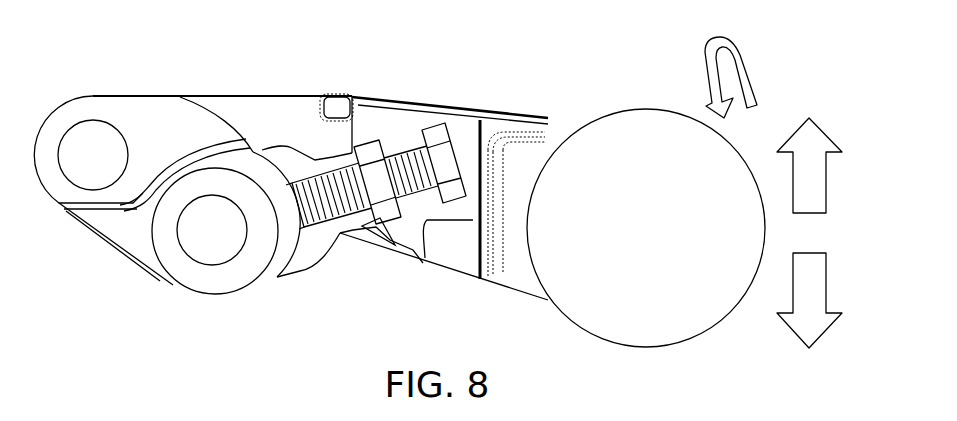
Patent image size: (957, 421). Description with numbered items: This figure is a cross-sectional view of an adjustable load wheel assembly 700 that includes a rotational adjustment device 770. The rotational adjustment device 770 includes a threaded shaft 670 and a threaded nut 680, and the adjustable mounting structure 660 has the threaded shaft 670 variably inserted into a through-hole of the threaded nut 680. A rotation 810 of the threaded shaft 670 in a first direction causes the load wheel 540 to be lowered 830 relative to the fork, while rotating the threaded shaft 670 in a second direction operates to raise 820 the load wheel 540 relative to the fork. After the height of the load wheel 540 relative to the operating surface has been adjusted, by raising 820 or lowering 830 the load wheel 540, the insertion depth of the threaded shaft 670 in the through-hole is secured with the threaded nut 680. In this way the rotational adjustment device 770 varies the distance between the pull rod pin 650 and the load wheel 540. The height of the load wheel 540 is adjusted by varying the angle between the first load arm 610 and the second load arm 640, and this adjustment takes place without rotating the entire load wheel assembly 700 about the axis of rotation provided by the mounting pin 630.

The load wheel assembly 700 is at (224, 63).
The first load arm 610 is at (277, 95).
The mounting pin 630 is at (80, 122).
The second load arm 640 is at (108, 238).
The pull rod pin 650 is at (210, 266).
The adjustable mounting structure 660 is at (263, 281).
The threaded shaft 670 is at (476, 136).
The threaded nut 680 is at (392, 244).
The rotational adjustment device 770 is at (426, 91).
The load wheel 540 is at (683, 337).
The rotation 810 is at (703, 72).
The raise 820 is at (827, 183).
The lower 830 is at (827, 291).